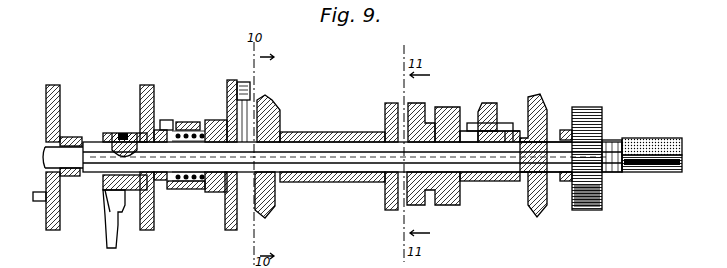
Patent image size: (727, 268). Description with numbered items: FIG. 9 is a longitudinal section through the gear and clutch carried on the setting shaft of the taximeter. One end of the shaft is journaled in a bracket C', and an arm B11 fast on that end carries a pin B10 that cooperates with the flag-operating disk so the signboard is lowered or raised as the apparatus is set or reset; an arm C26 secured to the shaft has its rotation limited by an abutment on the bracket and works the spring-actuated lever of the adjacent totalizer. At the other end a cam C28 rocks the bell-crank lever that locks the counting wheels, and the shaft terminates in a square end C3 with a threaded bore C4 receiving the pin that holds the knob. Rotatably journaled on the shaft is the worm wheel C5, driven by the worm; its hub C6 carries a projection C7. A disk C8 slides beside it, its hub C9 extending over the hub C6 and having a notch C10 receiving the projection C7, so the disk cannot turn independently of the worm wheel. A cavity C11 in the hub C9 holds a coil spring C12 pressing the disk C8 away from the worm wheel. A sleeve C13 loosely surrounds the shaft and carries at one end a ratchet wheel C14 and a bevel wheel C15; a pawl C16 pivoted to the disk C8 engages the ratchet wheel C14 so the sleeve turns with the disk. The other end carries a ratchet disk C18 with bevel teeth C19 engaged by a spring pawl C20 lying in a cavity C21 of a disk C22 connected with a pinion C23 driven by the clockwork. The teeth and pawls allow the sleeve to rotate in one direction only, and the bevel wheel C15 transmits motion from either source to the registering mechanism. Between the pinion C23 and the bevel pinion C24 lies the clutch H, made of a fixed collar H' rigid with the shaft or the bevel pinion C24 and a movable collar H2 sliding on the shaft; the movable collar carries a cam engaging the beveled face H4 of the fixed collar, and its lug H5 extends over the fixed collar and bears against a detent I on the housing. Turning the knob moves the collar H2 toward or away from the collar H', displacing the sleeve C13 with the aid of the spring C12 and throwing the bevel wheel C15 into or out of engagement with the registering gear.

The bracket C' is at (332, 183).
The pin B10 is at (41, 201).
The arm B11 is at (60, 222).
The arm C26 is at (110, 199).
The worm wheel C5 is at (142, 92).
The hub C6 is at (159, 130).
The projection C7 is at (170, 122).
The disk C8 is at (232, 81).
The hub C9 is at (215, 121).
The notch C10 is at (190, 123).
The cavity C11 is at (212, 192).
The coil spring C12 is at (180, 189).
The sleeve C13 is at (338, 182).
The ratchet wheel C14 is at (237, 226).
The bevel wheel C15 is at (270, 101).
The pawl C16 is at (250, 88).
The ratchet disk C18 is at (388, 105).
The bevel teeth C19 is at (388, 196).
The spring or pawl C20 is at (418, 104).
The cavity C21 is at (440, 108).
The disk C22 is at (425, 206).
The pinion C23 is at (484, 105).
The bevel pinion C24 is at (580, 108).
The cam C28 is at (604, 112).
The square end C3 is at (630, 145).
The threaded bore C4 is at (640, 165).
The clutch H is at (503, 155).
The fixed collar H' is at (551, 112).
The movable collar H2 is at (469, 123).
The beveled face or cam H4 is at (516, 138).
The lug H5 is at (488, 122).
The detent or bracket I is at (500, 130).